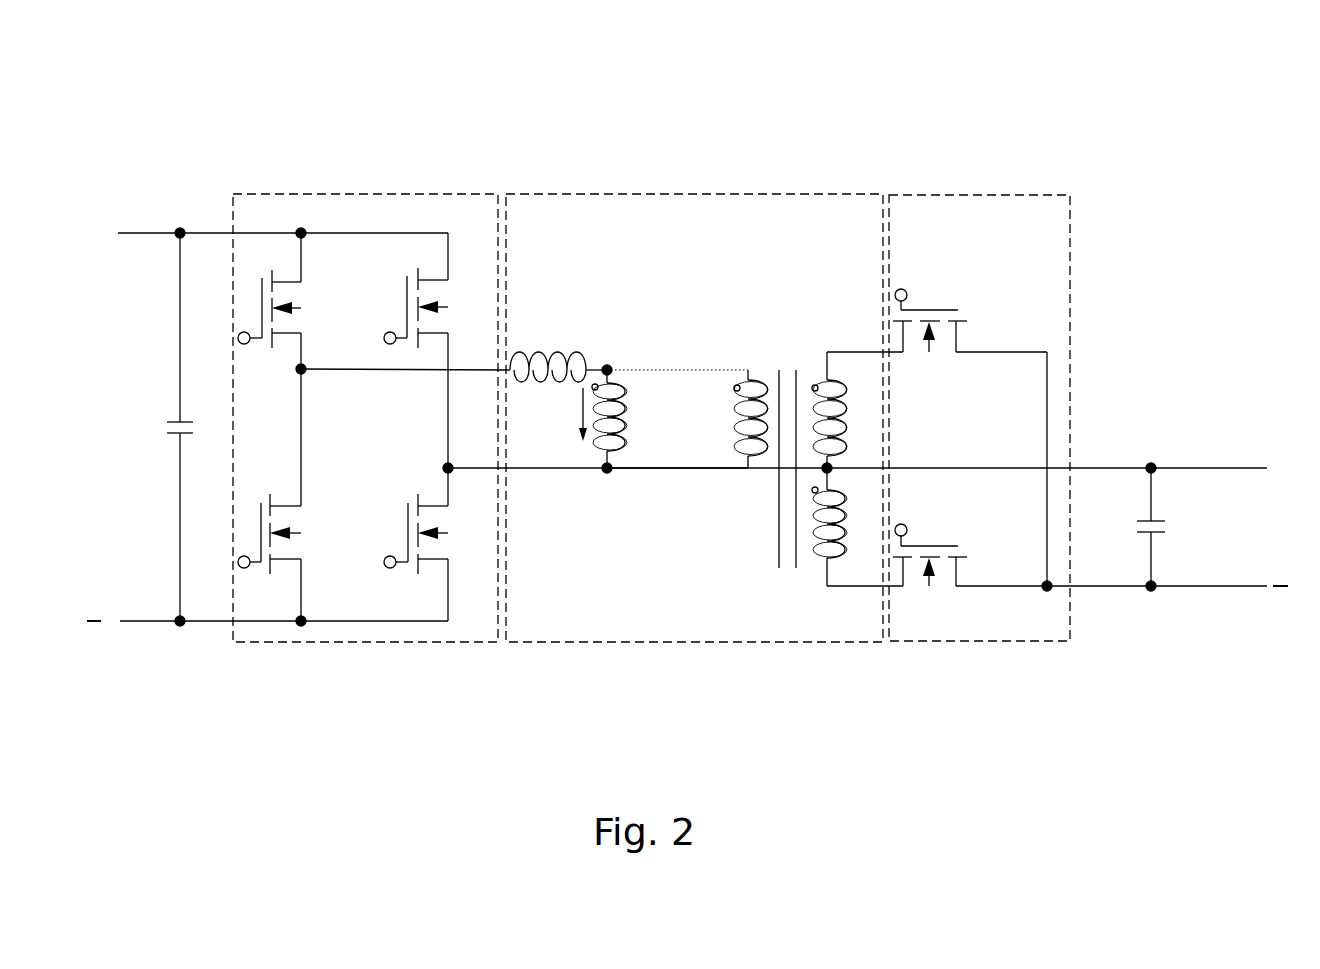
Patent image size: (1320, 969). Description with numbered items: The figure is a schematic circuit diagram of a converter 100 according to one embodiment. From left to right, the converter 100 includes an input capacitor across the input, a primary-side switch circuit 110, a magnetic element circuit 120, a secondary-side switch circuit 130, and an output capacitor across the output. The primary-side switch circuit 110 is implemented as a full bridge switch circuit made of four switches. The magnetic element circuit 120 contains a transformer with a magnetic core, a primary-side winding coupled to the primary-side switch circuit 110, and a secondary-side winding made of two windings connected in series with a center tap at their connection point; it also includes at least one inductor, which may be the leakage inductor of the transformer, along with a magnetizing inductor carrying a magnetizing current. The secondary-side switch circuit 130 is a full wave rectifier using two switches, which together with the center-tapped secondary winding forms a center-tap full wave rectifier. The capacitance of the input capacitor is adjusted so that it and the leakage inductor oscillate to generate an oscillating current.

The converter 100 is at (99, 104).
The primary-side switch circuit 110 is at (357, 193).
The magnetic element circuit 120 is at (712, 195).
The secondary-side switch circuit 130 is at (960, 195).